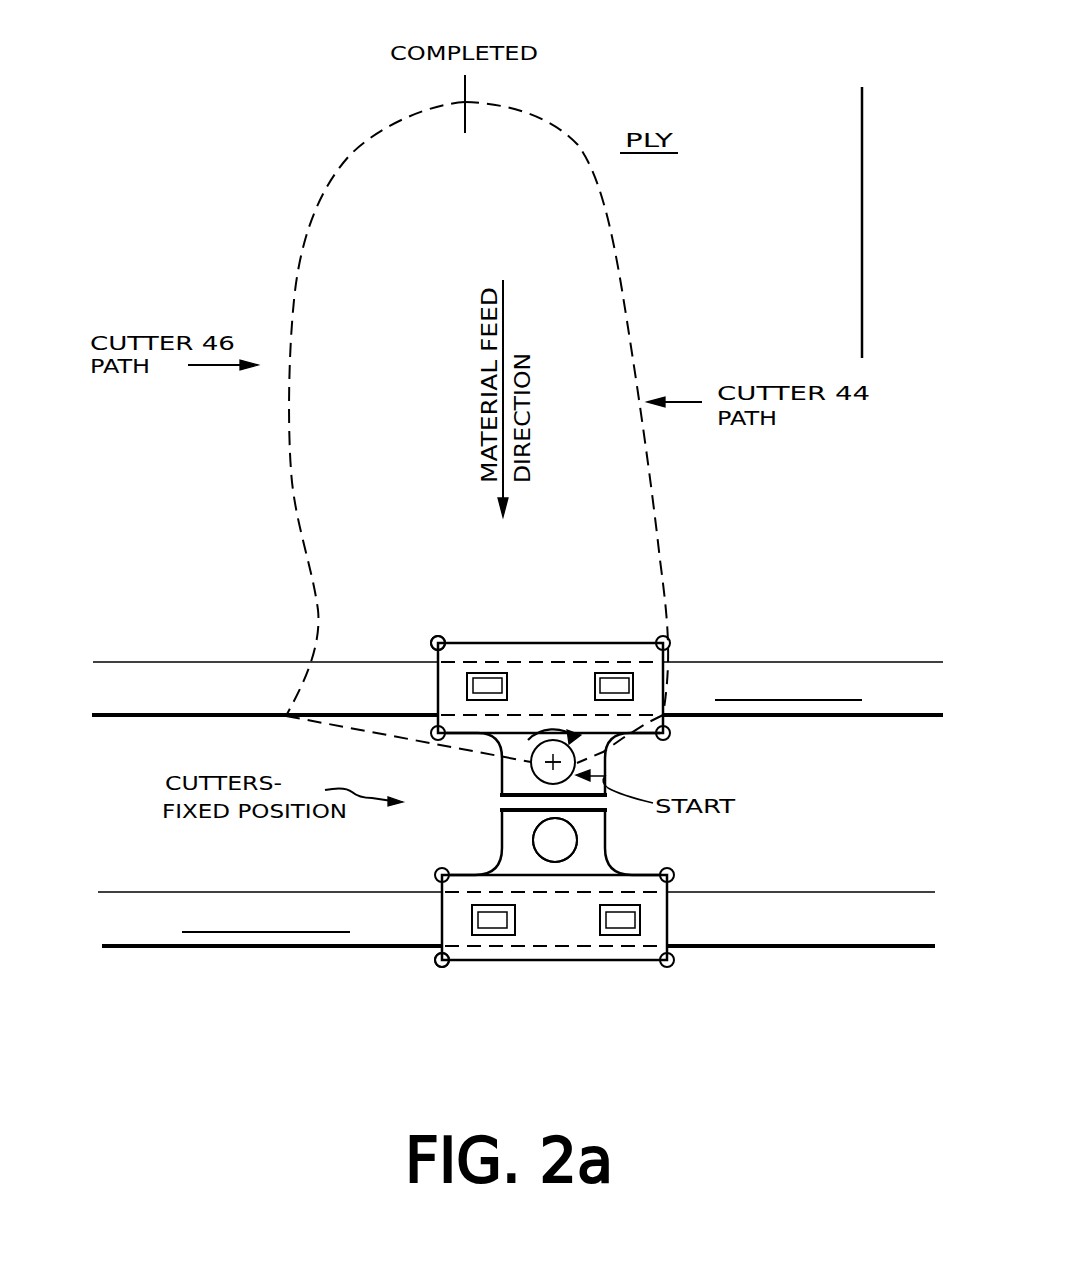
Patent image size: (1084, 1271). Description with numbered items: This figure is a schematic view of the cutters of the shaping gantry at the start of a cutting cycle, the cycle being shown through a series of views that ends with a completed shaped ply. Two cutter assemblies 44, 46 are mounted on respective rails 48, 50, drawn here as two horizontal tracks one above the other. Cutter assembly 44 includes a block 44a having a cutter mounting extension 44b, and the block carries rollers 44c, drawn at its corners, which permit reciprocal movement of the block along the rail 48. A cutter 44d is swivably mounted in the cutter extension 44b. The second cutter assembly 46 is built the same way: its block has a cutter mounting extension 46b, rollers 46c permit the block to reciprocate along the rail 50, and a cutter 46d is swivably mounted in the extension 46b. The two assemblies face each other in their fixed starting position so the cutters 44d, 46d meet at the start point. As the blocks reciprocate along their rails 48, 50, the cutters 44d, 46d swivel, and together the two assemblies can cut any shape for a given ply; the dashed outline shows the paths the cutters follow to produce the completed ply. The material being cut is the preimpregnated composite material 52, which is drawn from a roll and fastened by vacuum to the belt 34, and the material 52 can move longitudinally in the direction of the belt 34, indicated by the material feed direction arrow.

The belt 34 is at (927, 253).
The cutter assembly 44 is at (549, 680).
The block 44a is at (545, 648).
The cutter mounting extension 44b is at (583, 770).
The rollers 44c is at (443, 640).
The cutter 44d is at (548, 765).
The cutter assembly 46 is at (531, 916).
The cutter mounting extension 46b is at (595, 843).
The rollers 46c is at (447, 967).
The cutter 46d is at (548, 840).
The rail 48 is at (702, 672).
The rail 50 is at (828, 907).
The preimpregnated composite material 52 is at (827, 253).